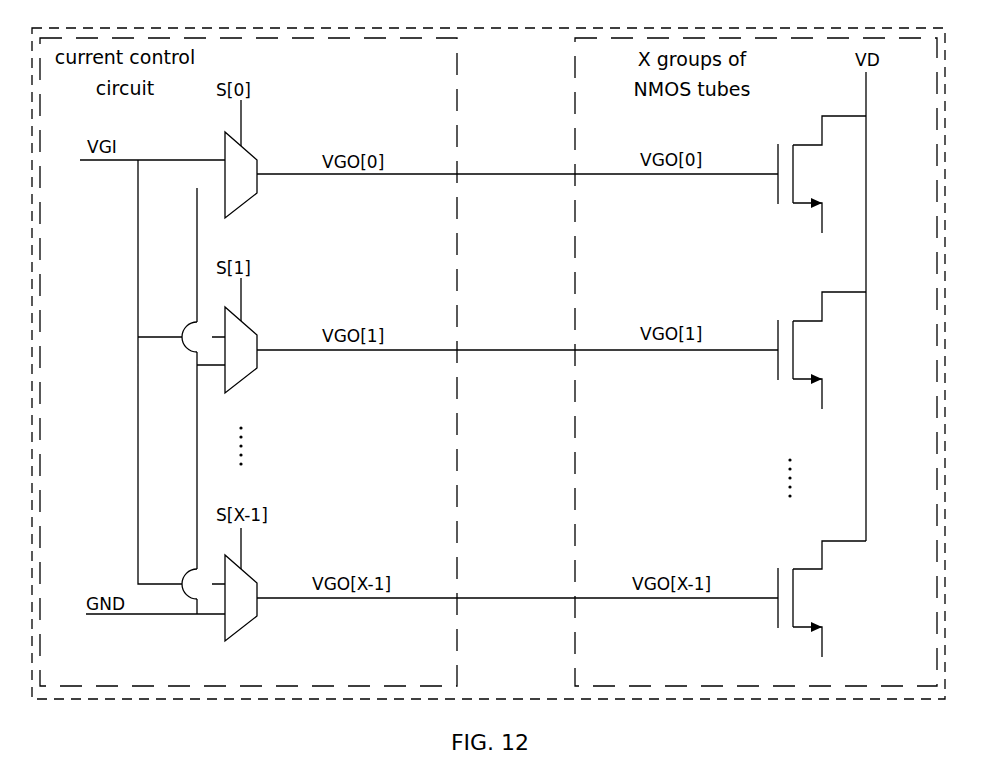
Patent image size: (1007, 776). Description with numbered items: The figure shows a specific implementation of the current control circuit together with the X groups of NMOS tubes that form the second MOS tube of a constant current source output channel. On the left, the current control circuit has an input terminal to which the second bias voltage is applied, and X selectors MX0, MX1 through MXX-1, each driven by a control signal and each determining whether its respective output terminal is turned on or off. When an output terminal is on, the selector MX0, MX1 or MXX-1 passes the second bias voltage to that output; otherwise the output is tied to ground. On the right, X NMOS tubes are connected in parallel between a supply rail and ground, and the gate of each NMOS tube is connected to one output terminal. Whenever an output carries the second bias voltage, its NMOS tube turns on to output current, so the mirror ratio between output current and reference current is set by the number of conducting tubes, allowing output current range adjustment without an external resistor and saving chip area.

The selector MX0 is at (501, 171).
The selector MX1 is at (501, 349).
The selector MXX-1 is at (501, 593).